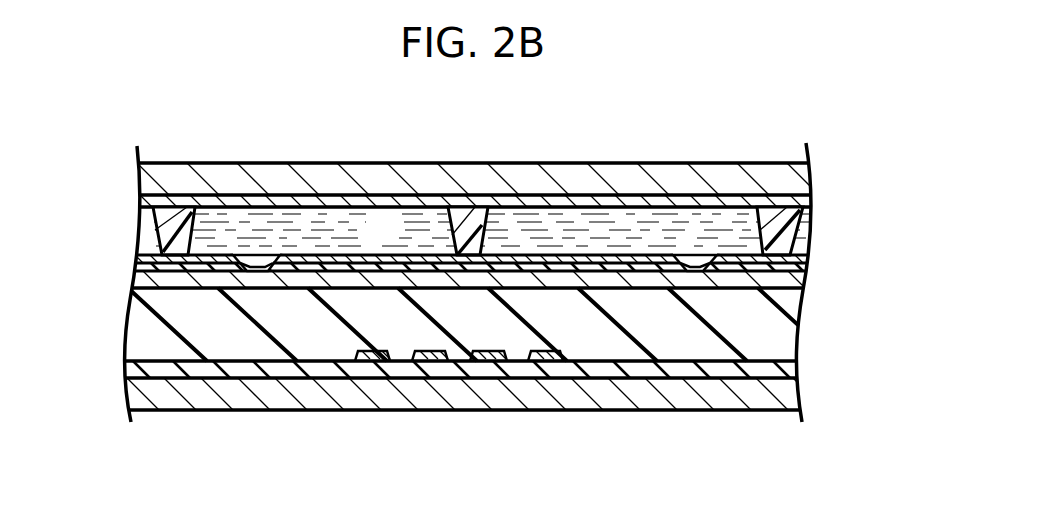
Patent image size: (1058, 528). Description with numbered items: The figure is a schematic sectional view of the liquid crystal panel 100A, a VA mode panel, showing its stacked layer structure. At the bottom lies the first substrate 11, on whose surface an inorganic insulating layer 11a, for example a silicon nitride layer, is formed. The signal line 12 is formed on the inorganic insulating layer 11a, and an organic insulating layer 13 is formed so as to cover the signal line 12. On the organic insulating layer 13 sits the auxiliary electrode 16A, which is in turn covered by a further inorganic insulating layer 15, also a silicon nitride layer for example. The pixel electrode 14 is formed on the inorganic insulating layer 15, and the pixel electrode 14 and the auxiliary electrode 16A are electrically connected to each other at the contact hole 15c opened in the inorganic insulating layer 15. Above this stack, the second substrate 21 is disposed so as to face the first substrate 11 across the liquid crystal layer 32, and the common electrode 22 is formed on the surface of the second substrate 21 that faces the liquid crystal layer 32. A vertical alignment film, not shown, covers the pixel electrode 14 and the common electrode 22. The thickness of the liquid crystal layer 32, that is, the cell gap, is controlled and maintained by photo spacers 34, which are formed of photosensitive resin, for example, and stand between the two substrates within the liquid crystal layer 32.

The liquid crystal panel 100A is at (838, 116).
The first substrate 11 is at (778, 396).
The inorganic insulating layer 11a is at (782, 368).
The signal line 12 is at (565, 352).
The organic insulating layer 13 is at (398, 338).
The pixel electrode 14 is at (808, 258).
The inorganic insulating layer 15 is at (810, 268).
The contact hole 15c is at (704, 246).
The auxiliary electrode 16A is at (808, 281).
The second substrate 21 is at (808, 181).
The common electrode 22 is at (808, 201).
The liquid crystal layer 32 is at (397, 238).
The photo spacers 34 is at (167, 233).